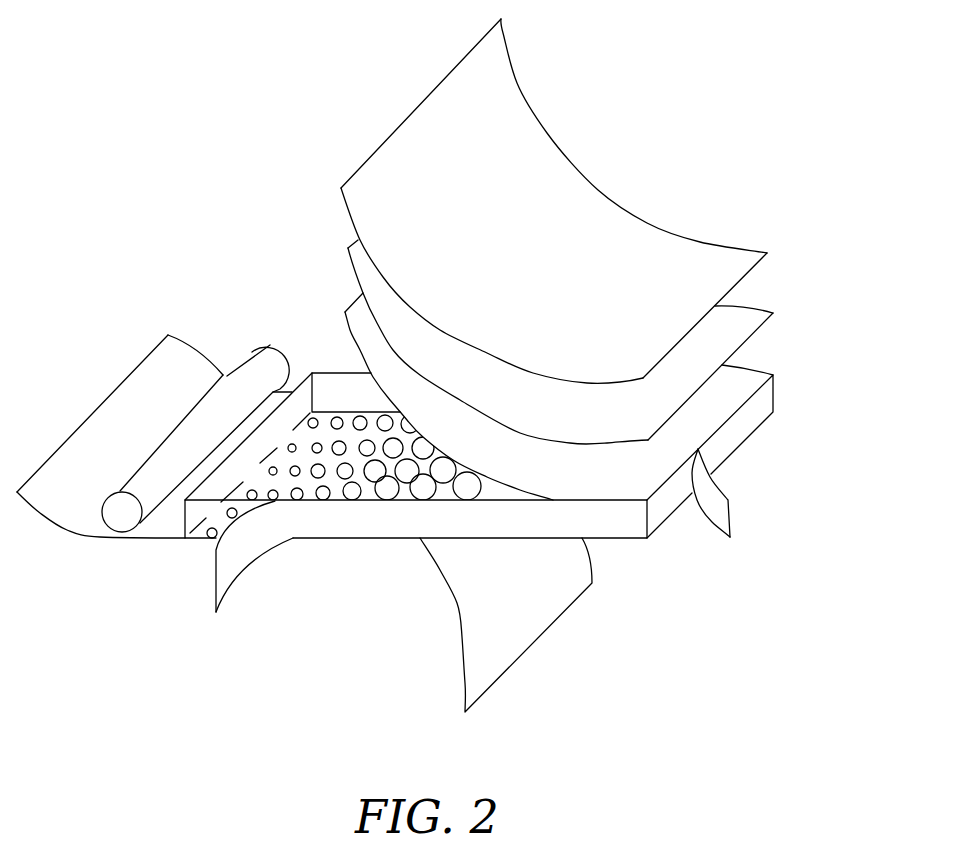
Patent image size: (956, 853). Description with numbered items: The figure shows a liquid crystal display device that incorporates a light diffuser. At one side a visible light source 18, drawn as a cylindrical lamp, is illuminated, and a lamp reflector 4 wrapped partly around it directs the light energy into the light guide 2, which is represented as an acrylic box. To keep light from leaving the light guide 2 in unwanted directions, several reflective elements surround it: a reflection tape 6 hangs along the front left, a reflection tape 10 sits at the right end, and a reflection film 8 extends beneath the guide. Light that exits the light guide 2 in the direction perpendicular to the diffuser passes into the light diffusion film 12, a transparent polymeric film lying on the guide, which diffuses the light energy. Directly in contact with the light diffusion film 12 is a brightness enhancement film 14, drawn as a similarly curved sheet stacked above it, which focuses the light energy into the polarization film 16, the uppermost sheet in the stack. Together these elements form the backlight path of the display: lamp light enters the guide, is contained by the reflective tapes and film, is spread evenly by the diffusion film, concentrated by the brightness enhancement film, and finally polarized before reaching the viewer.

The light guide 2 is at (350, 387).
The lamp reflector 4 is at (57, 503).
The reflection tape 6 is at (238, 557).
The reflection film 8 is at (520, 620).
The reflection tape 10 is at (723, 517).
The light diffusion film 12 is at (707, 412).
The brightness enhancement film 14 is at (727, 330).
The polarization film 16 is at (628, 232).
The visible light source 18 is at (250, 365).